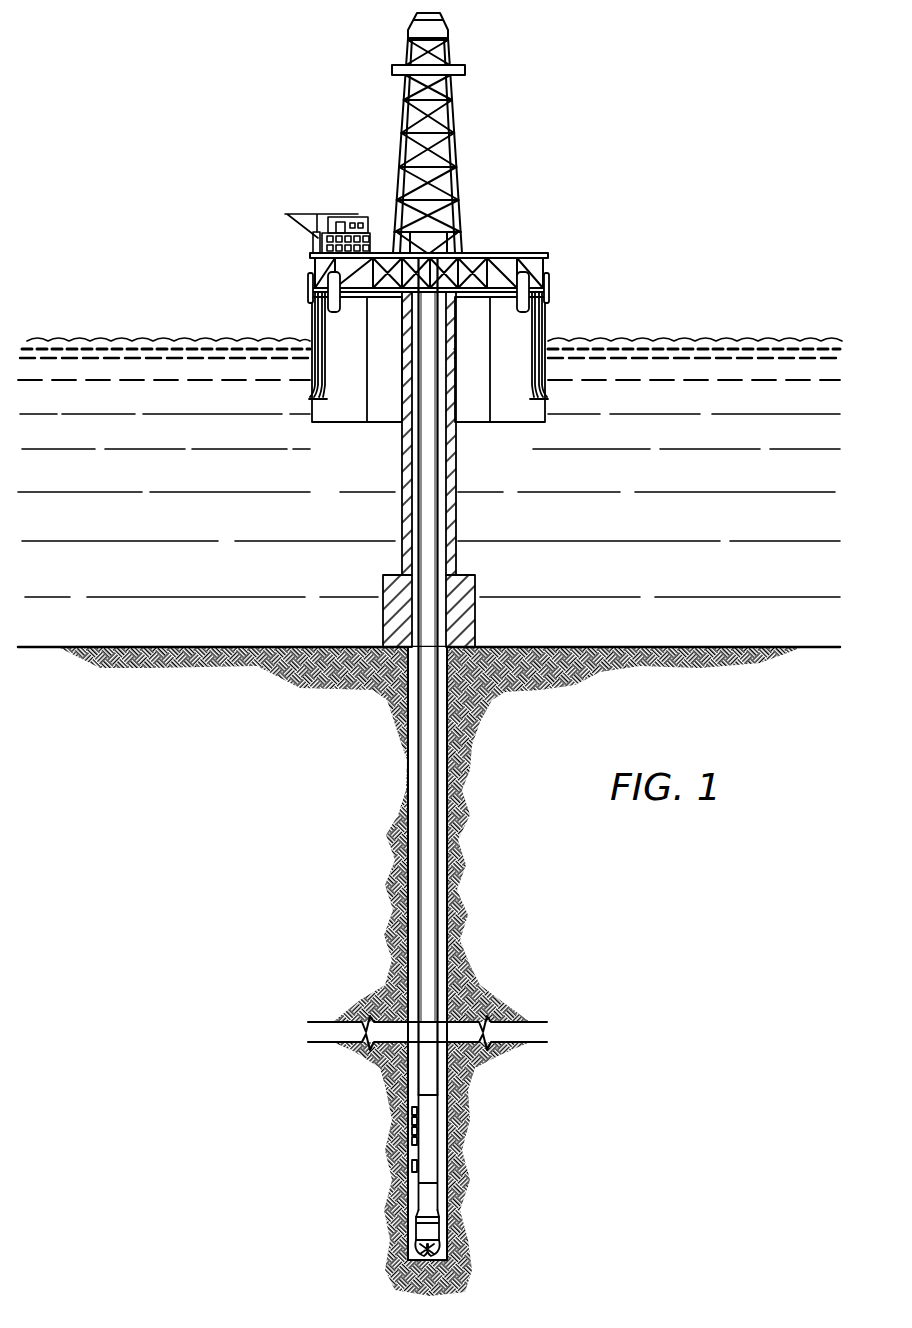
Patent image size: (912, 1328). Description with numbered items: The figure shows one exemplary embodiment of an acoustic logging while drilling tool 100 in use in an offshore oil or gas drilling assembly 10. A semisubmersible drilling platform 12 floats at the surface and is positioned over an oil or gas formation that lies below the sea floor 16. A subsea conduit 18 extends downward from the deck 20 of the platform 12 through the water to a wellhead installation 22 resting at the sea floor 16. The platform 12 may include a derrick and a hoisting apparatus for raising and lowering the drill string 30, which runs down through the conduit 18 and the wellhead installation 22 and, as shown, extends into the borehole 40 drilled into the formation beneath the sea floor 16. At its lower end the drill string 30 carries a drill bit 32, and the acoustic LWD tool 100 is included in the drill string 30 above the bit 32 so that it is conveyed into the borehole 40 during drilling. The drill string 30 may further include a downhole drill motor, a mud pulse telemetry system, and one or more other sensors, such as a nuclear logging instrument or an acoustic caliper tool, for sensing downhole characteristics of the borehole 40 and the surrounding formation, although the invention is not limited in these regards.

The offshore oil or gas drilling assembly 10 is at (528, 143).
The semisubmersible drilling platform 12 is at (536, 256).
The deck 20 is at (549, 293).
The sea floor 16 is at (700, 647).
The subsea conduit 18 is at (455, 518).
The wellhead installation 22 is at (470, 575).
The drill string 30 is at (430, 434).
The borehole 40 is at (408, 921).
The acoustic logging while drilling tool 100 is at (438, 1122).
The drill bit 32 is at (445, 1250).